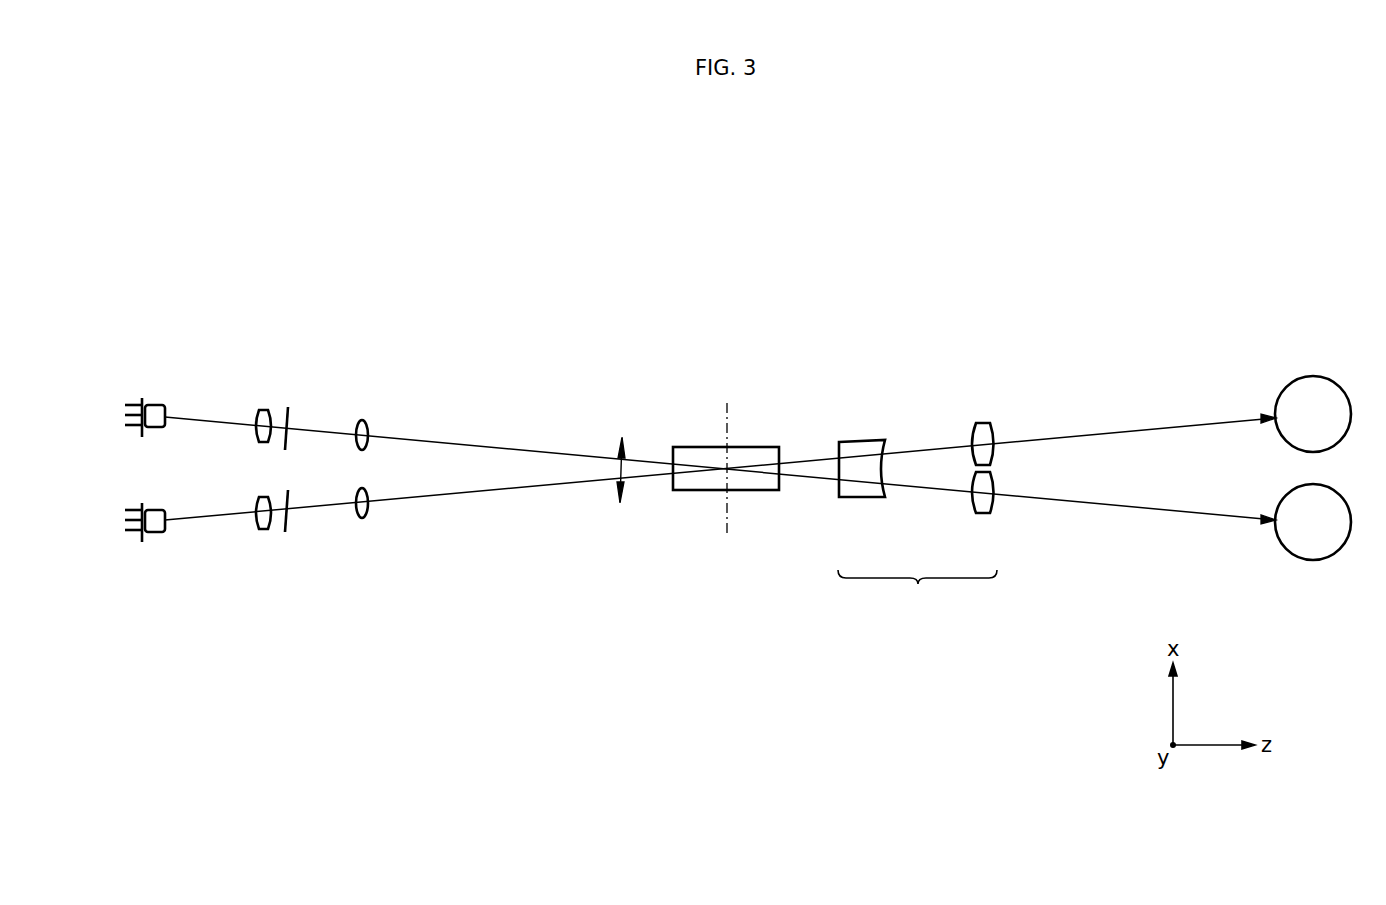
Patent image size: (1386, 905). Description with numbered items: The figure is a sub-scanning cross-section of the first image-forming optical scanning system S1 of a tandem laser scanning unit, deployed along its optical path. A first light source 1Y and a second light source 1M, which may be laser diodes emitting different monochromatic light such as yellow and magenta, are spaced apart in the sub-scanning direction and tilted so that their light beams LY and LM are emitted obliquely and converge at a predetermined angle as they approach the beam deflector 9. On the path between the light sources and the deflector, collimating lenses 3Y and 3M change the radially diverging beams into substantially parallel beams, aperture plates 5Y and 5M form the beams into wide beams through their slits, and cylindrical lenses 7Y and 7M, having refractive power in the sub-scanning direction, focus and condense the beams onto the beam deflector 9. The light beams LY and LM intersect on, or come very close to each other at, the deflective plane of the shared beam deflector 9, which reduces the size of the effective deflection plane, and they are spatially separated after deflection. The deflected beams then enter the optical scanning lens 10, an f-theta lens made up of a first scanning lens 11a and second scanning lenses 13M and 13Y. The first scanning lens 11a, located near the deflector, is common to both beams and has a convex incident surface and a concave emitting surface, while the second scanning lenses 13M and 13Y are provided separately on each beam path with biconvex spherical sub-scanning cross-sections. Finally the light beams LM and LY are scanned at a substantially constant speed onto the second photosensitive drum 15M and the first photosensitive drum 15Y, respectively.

The first light source 1Y is at (157, 402).
The second light source 1M is at (157, 536).
The collimating lens 3Y is at (267, 408).
The collimating lens 3M is at (265, 531).
The aperture plate 5Y is at (290, 410).
The aperture plate 5M is at (289, 522).
The cylindrical lens 7Y is at (368, 421).
The cylindrical lens 7M is at (368, 517).
The beam deflector 9 is at (692, 446).
The optical scanning lens 10 is at (917, 590).
The first scanning lens 11a is at (872, 440).
The second scanning lens 13M is at (995, 425).
The second scanning lens 13Y is at (996, 512).
The second photosensitive drum 15M is at (1322, 377).
The first photosensitive drum 15Y is at (1318, 561).
The light beam LY is at (471, 439).
The light beam LM is at (470, 498).
The first image-forming optical scanning system S1 is at (1138, 266).